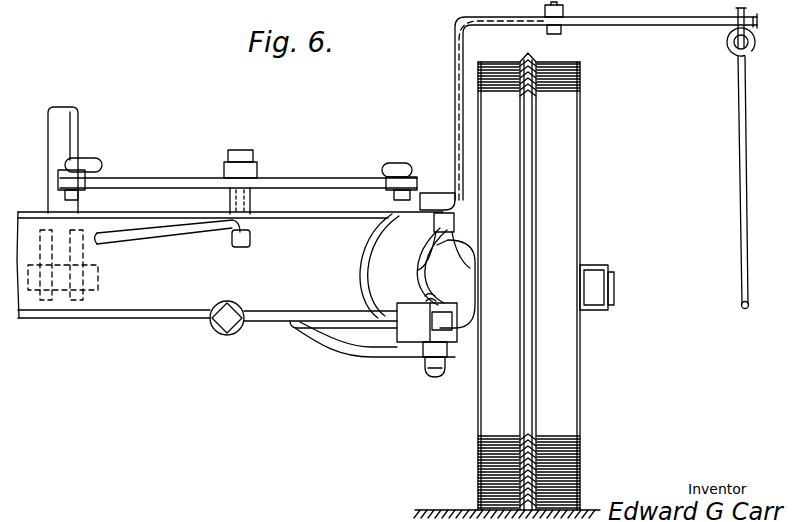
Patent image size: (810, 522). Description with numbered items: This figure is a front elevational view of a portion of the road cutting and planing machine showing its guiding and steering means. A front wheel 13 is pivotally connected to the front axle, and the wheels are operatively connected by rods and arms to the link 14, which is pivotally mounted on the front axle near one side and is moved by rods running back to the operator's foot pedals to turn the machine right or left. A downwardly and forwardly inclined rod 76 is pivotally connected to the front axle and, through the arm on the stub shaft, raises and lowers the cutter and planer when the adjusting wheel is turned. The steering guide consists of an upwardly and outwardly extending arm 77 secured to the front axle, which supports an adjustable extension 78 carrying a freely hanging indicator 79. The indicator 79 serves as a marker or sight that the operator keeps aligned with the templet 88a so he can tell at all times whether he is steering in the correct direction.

The front wheel 13 is at (580, 138).
The link 14 is at (300, 181).
The rod 76 is at (80, 110).
The arm 77 is at (455, 42).
The adjustable extension 78 is at (647, 22).
The indicator 79 is at (740, 232).
The templet 88a is at (749, 304).